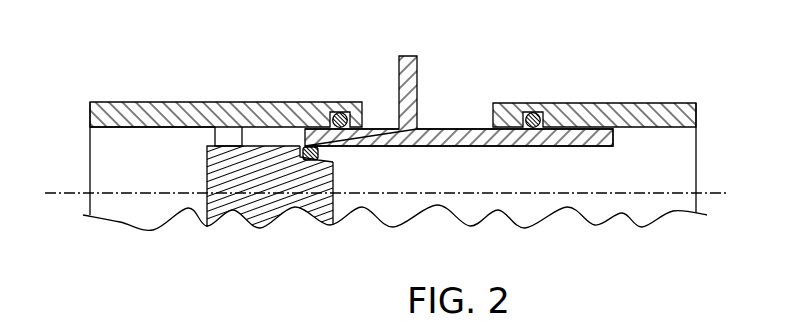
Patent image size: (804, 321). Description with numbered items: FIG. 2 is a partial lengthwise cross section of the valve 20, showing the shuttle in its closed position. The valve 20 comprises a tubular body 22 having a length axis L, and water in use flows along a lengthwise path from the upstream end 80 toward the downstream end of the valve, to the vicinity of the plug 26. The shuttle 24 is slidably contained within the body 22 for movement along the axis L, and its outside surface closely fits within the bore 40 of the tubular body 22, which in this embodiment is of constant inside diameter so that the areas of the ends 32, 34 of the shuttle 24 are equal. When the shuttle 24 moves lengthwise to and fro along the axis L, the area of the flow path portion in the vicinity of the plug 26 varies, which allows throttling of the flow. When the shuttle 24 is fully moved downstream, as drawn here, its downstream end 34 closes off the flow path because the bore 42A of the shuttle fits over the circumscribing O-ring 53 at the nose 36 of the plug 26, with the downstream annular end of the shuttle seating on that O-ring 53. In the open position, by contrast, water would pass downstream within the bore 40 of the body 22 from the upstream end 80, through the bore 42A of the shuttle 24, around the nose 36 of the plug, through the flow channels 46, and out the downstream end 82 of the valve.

The valve 20 is at (142, 56).
The tubular body 22 is at (107, 94).
The shuttle 24 is at (438, 126).
The plug 26 is at (207, 213).
The end of shuttle 32 is at (614, 137).
The downstream end of shuttle 34 is at (302, 147).
The nose of plug 36 is at (336, 212).
The bore of tubular body 40 is at (125, 128).
The bore of shuttle 42A is at (528, 147).
The flow channels 46 is at (248, 137).
The O-ring 53 is at (305, 161).
The upstream end 80 is at (698, 116).
The downstream end 82 is at (90, 120).
The length axis L is at (715, 193).